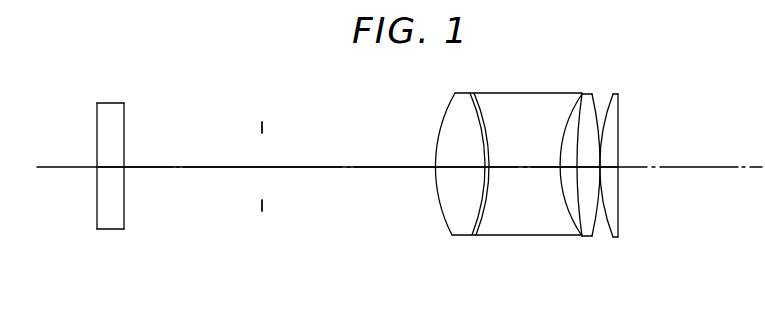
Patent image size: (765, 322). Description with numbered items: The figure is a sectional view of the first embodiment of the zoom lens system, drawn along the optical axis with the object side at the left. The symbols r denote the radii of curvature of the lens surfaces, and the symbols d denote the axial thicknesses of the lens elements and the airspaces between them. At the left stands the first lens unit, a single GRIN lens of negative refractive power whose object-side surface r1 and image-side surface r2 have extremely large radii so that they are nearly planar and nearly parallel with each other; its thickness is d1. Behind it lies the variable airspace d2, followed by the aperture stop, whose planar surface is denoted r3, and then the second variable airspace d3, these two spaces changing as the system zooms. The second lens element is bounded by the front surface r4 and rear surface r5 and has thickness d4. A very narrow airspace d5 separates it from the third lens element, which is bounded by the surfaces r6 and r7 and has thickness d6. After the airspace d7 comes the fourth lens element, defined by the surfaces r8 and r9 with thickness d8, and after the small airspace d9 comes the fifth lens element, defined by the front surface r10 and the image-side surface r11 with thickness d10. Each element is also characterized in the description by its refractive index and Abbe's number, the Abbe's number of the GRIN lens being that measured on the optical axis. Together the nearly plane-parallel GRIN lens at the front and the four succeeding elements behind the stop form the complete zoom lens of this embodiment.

The radius of curvature of first surface r1 is at (97, 202).
The radius of curvature of second surface r2 is at (124, 207).
The stop surface r3 is at (262, 209).
The radius of curvature of fourth surface r4 is at (440, 207).
The radius of curvature of fifth surface r5 is at (476, 213).
The radius of curvature of sixth surface r6 is at (482, 213).
The radius of curvature of seventh surface r7 is at (566, 215).
The radius of curvature of eighth surface r8 is at (580, 222).
The radius of curvature of ninth surface r9 is at (595, 222).
The radius of curvature of tenth surface r10 is at (613, 225).
The radius of curvature of eleventh surface r11 is at (618, 200).
The thickness of first lens element d1 is at (108, 167).
The variable airspace D1 d2 is at (205, 167).
The variable airspace D2 d3 is at (324, 167).
The thickness of second lens element d4 is at (452, 167).
The airspace between second and third lens elements d5 is at (489, 167).
The thickness of third lens element d6 is at (543, 167).
The airspace between third and fourth lens elements d7 is at (563, 160).
The thickness of fourth lens element d8 is at (591, 165).
The airspace between fourth and fifth lens elements d9 is at (602, 165).
The thickness of fifth lens element d10 is at (604, 166).